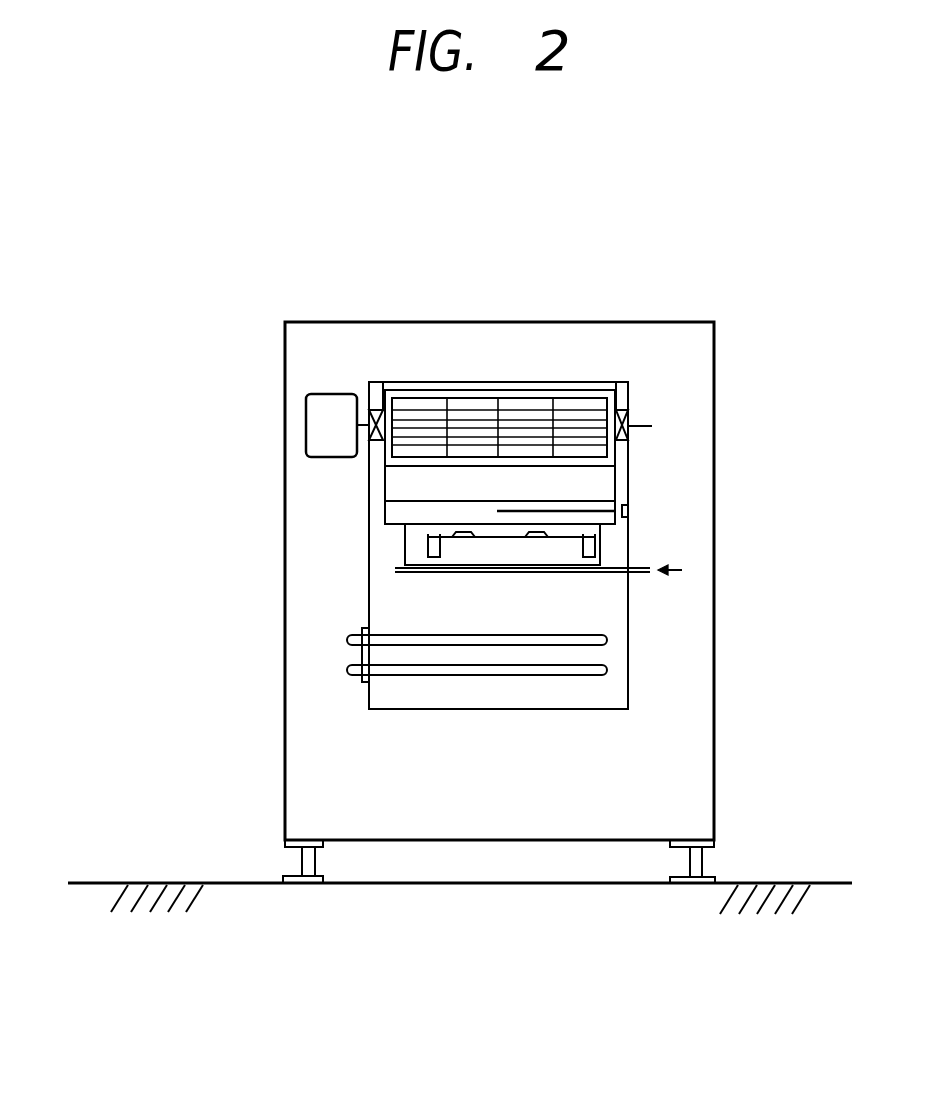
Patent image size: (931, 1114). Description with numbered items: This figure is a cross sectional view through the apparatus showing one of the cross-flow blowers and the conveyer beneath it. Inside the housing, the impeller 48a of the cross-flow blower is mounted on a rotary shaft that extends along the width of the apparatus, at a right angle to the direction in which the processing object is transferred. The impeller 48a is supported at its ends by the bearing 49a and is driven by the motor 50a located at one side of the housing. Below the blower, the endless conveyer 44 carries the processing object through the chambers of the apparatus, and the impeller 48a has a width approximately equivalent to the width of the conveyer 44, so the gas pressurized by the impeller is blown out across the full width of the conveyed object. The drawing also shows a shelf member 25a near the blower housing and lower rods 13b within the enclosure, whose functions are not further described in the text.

The motor 50a is at (318, 394).
The bearing 49a is at (376, 410).
The impeller 48a is at (523, 405).
The shelf 25a is at (597, 513).
The conveyer 44 is at (430, 548).
The rod 13b is at (535, 678).